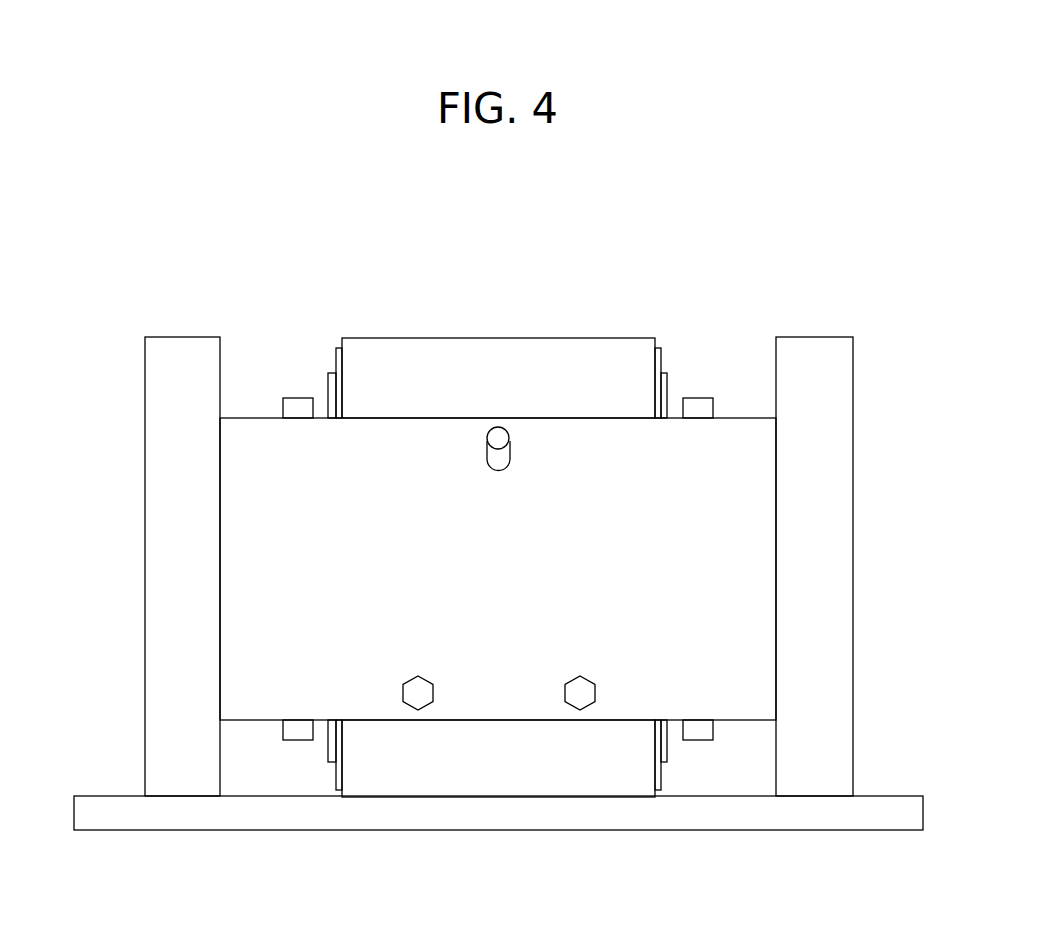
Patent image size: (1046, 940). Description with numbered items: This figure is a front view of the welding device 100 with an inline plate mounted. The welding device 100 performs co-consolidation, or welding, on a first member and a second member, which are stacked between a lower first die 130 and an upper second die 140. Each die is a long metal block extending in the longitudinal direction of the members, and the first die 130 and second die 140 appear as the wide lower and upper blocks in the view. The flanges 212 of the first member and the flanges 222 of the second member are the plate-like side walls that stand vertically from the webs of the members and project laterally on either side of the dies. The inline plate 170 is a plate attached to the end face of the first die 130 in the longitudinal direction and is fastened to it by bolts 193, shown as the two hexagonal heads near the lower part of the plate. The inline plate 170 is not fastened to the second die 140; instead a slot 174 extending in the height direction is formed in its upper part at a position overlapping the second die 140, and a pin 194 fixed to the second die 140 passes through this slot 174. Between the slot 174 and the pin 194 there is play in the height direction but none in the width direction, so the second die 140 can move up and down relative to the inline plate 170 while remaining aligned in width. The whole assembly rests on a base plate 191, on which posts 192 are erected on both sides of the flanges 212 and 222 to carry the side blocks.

The welding device 100 is at (494, 282).
The first die 130 is at (585, 782).
The second die 140 is at (583, 355).
The inline plate 170 is at (482, 721).
The slot 174 is at (493, 460).
The base plate 191 is at (868, 831).
The post 192 is at (145, 518).
The bolt 193 is at (421, 675).
The pin 194 is at (501, 438).
The flange 212 is at (300, 741).
The flange 222 is at (297, 397).